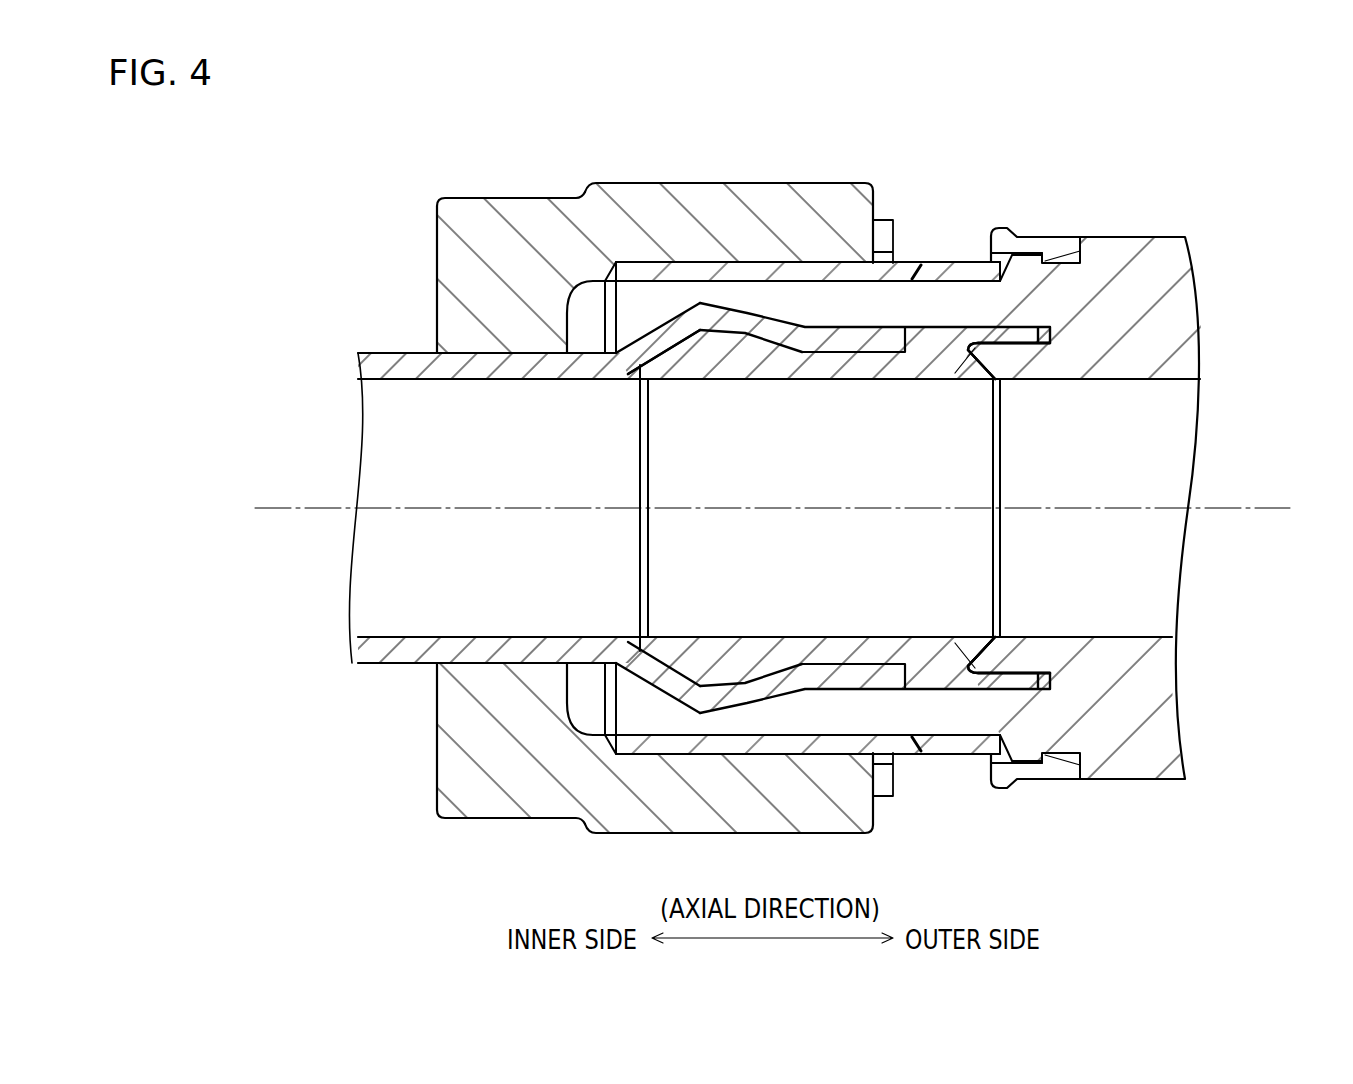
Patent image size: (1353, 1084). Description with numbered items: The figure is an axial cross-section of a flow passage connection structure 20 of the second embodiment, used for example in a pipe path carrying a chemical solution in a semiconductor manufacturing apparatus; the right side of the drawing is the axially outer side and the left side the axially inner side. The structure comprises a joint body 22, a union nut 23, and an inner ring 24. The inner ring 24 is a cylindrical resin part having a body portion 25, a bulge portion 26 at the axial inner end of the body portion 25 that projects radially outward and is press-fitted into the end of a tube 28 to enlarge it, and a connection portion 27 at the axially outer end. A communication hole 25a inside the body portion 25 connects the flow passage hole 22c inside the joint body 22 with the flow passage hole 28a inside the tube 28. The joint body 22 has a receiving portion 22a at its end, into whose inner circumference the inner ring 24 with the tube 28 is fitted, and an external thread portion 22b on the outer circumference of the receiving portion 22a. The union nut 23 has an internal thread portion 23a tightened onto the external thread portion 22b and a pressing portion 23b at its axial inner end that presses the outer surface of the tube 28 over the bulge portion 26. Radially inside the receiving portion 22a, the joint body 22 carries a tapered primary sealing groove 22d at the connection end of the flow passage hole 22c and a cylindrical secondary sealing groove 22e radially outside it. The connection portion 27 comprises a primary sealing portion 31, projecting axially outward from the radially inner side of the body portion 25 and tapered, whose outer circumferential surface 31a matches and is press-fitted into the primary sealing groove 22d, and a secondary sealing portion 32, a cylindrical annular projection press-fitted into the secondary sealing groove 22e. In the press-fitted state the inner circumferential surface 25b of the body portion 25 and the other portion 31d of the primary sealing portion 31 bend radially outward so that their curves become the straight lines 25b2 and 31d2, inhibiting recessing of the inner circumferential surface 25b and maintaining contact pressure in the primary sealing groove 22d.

The flow passage connection structure 20 is at (392, 139).
The joint body 22 is at (1162, 226).
The receiving portion 22a is at (898, 303).
The external thread portion 22b is at (958, 272).
The flow passage hole 22c is at (1120, 495).
The primary sealing groove 22d is at (955, 375).
The secondary sealing groove 22e is at (1043, 345).
The union nut 23 is at (633, 172).
The internal thread portion 23a is at (678, 275).
The pressing portion 23b is at (462, 328).
The inner ring 24 is at (805, 626).
The body portion 25 is at (866, 653).
The communication hole 25a is at (848, 495).
The inner circumferential surface 25b is at (727, 637).
The straight line 25b2 is at (695, 445).
The bulge portion 26 is at (697, 657).
The connection portion 27 is at (1085, 528).
The tube 28 is at (397, 674).
The flow passage hole 28a is at (520, 495).
The primary sealing portion 31 is at (990, 632).
The outer circumferential surface 31a is at (985, 360).
The other portion 31d is at (972, 633).
The straight line 31d2 is at (941, 596).
The secondary sealing portion 32 is at (1015, 683).